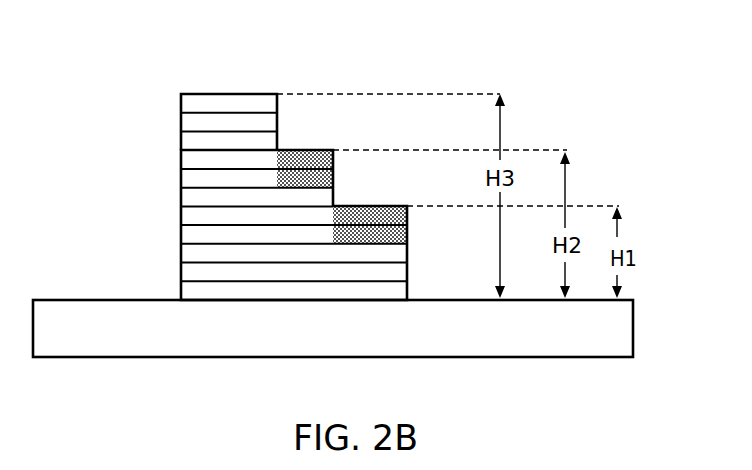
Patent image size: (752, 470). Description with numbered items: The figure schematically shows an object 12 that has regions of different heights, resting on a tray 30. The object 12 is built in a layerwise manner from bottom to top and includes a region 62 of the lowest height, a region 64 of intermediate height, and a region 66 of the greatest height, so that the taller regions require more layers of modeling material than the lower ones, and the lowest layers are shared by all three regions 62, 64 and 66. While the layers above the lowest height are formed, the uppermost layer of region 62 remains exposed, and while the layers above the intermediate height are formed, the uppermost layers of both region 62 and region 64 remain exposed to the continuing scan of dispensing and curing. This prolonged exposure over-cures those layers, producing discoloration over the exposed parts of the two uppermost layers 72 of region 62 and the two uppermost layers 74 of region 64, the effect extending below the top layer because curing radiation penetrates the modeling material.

The object 12 is at (111, 59).
The tray 30 is at (333, 328).
The region 62 is at (387, 206).
The region 64 is at (294, 150).
The region 66 is at (218, 94).
The two uppermost layers of region 62 72 is at (411, 207).
The two uppermost layers of region 64 74 is at (337, 151).